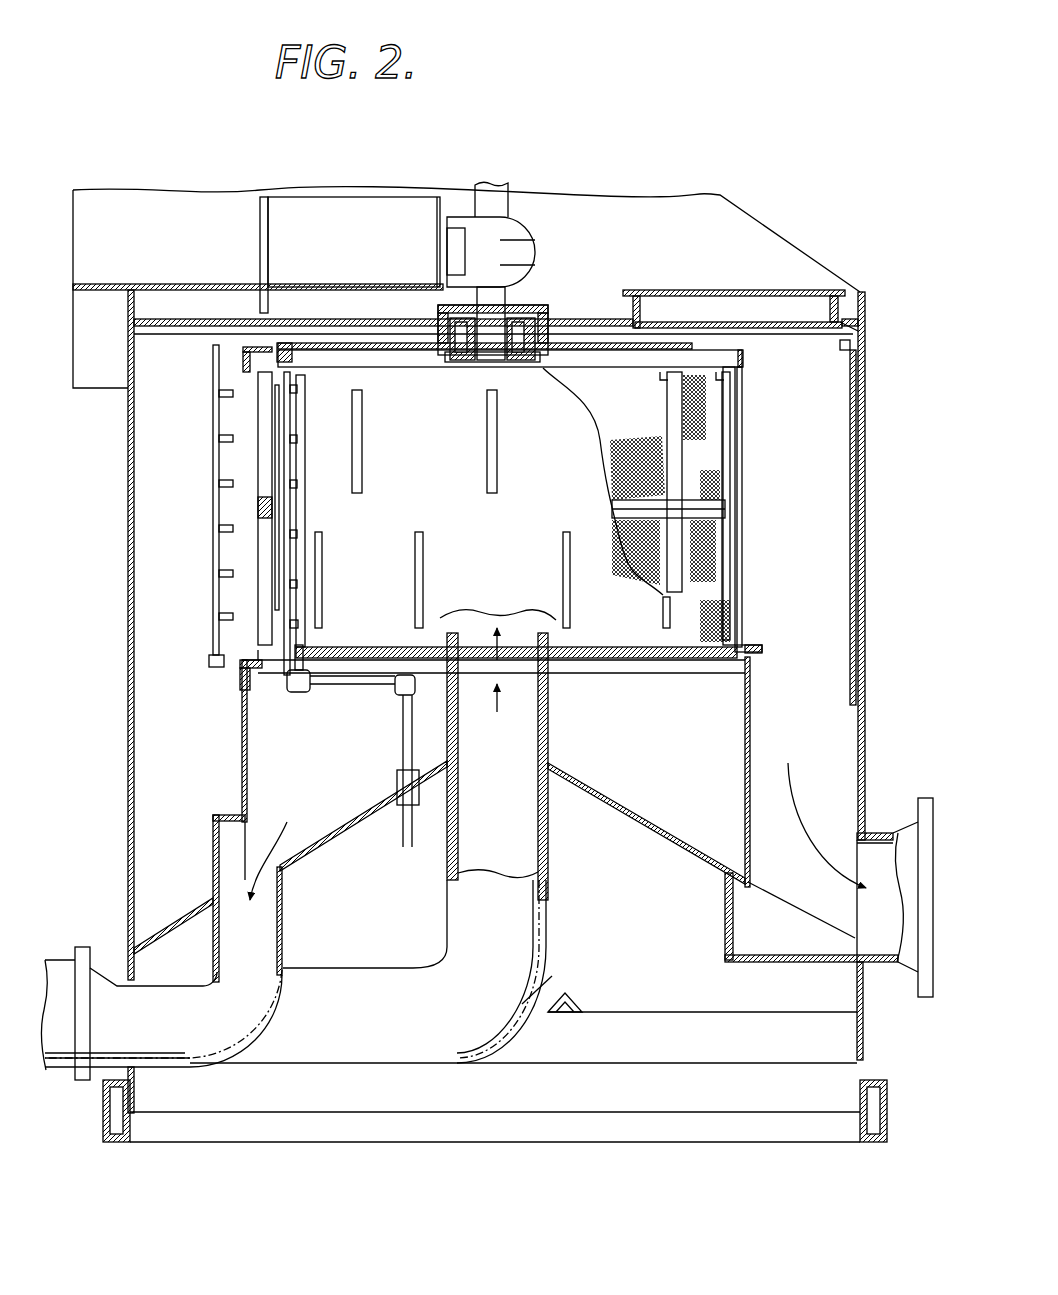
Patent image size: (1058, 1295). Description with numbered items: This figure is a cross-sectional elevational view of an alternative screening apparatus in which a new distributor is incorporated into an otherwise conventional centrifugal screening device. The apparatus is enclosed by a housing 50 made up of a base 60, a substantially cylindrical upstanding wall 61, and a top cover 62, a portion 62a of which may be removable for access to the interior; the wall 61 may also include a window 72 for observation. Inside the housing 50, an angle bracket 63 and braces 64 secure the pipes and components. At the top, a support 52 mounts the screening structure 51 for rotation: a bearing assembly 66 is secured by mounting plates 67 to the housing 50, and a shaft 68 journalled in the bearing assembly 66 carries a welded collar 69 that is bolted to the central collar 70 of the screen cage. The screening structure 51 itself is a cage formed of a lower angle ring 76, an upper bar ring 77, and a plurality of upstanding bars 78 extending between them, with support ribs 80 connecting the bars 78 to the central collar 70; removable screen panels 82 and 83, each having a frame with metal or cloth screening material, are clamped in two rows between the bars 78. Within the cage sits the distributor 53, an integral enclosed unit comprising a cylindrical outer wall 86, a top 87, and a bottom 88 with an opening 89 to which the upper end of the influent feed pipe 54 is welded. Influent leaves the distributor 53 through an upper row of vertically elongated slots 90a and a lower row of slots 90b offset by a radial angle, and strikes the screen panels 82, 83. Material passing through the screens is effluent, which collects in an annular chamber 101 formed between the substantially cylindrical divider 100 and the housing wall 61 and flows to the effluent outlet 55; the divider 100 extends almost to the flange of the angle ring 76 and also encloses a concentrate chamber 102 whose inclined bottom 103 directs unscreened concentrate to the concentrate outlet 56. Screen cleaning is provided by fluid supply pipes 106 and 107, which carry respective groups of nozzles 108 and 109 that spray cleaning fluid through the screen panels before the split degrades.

The housing 50 is at (868, 340).
The screening structure 51 is at (745, 388).
The support 52 is at (560, 206).
The distributor 53 is at (305, 537).
The influent feed pipe 54 is at (445, 906).
The effluent outlet 55 is at (880, 826).
The concentrate outlet 56 is at (285, 947).
The base 60 is at (103, 1118).
The upstanding wall 61 is at (130, 748).
The top cover 62 is at (192, 318).
The removable portion of top cover 62a is at (706, 290).
The angle bracket 63 is at (575, 993).
The braces 64 is at (598, 1043).
The bearing assembly 66 is at (537, 240).
The mounting plates 67 is at (398, 212).
The shaft 68 is at (520, 302).
The collar 69 is at (552, 320).
The central collar 70 is at (548, 368).
The window 72 is at (858, 414).
The lower angle ring 76 is at (735, 664).
The upper bar ring 77 is at (742, 360).
The upstanding bars 78 is at (735, 490).
The support ribs 80 is at (617, 355).
The upper screen panel 82 is at (708, 438).
The lower screen panel 83 is at (705, 560).
The cylindrical outer wall 86 is at (302, 588).
The top 87 is at (318, 373).
The bottom 88 is at (355, 653).
The opening 89 is at (542, 660).
The upper slots 90a is at (492, 412).
The lower slots 90b is at (422, 587).
The divider 100 is at (242, 718).
The annular chamber 101 is at (495, 745).
The concentrate chamber 102 is at (496, 711).
The inclined bottom 103 is at (345, 822).
The fluid supply pipe 106 is at (212, 460).
The fluid supply pipe 107 is at (297, 627).
The nozzles 108 is at (230, 436).
The nozzles 109 is at (293, 445).